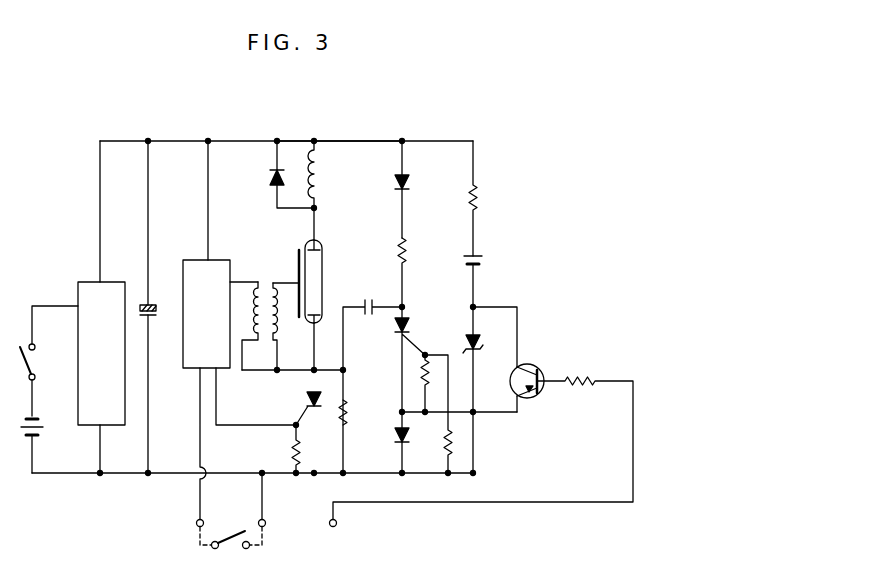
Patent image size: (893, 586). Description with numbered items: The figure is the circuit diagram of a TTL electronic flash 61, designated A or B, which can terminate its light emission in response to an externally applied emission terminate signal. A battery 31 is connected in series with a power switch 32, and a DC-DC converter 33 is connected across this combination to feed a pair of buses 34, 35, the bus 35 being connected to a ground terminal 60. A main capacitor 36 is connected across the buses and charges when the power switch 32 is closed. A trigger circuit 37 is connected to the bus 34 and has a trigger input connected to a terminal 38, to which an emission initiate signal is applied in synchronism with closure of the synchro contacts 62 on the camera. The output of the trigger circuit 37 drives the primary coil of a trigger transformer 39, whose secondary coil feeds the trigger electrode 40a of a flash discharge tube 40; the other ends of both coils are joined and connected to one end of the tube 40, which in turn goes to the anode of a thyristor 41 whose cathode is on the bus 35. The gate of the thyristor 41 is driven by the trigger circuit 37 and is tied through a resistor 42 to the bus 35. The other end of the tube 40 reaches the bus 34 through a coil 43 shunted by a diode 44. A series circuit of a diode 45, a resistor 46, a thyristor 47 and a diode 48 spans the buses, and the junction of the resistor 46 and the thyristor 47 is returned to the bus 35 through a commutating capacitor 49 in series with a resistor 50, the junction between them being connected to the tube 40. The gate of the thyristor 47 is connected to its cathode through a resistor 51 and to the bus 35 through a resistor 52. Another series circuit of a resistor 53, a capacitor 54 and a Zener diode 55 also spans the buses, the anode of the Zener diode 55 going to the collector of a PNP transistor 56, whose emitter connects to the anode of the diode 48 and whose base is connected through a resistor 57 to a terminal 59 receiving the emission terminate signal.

The battery 31 is at (42, 441).
The power switch 32 is at (36, 361).
The DC-DC converter 33 is at (113, 283).
The bus 34 is at (128, 141).
The bus 35 is at (128, 474).
The main capacitor 36 is at (151, 318).
The trigger circuit 37 is at (190, 261).
The terminal 38 is at (196, 523).
The trigger transformer 39 is at (265, 292).
The flash discharge tube 40 is at (322, 262).
The trigger electrode 40a is at (298, 254).
The thyristor 41 is at (308, 403).
The resistor 42 is at (292, 454).
The coil 43 is at (322, 176).
The diode 44 is at (269, 180).
The diode 45 is at (408, 186).
The resistor 46 is at (406, 252).
The thyristor 47 is at (407, 327).
The diode 48 is at (396, 438).
The commutating capacitor 49 is at (368, 300).
The resistor 50 is at (348, 415).
The resistor 51 is at (421, 373).
The resistor 52 is at (444, 440).
The resistor 53 is at (478, 198).
The capacitor 54 is at (466, 261).
The Zener diode 55 is at (478, 345).
The PNP transistor 56 is at (535, 372).
The resistor 57 is at (580, 388).
The terminal 59 is at (333, 527).
The ground terminal 60 is at (266, 522).
The electronic flash 61 is at (325, 135).
The synchro contacts 62 is at (238, 535).